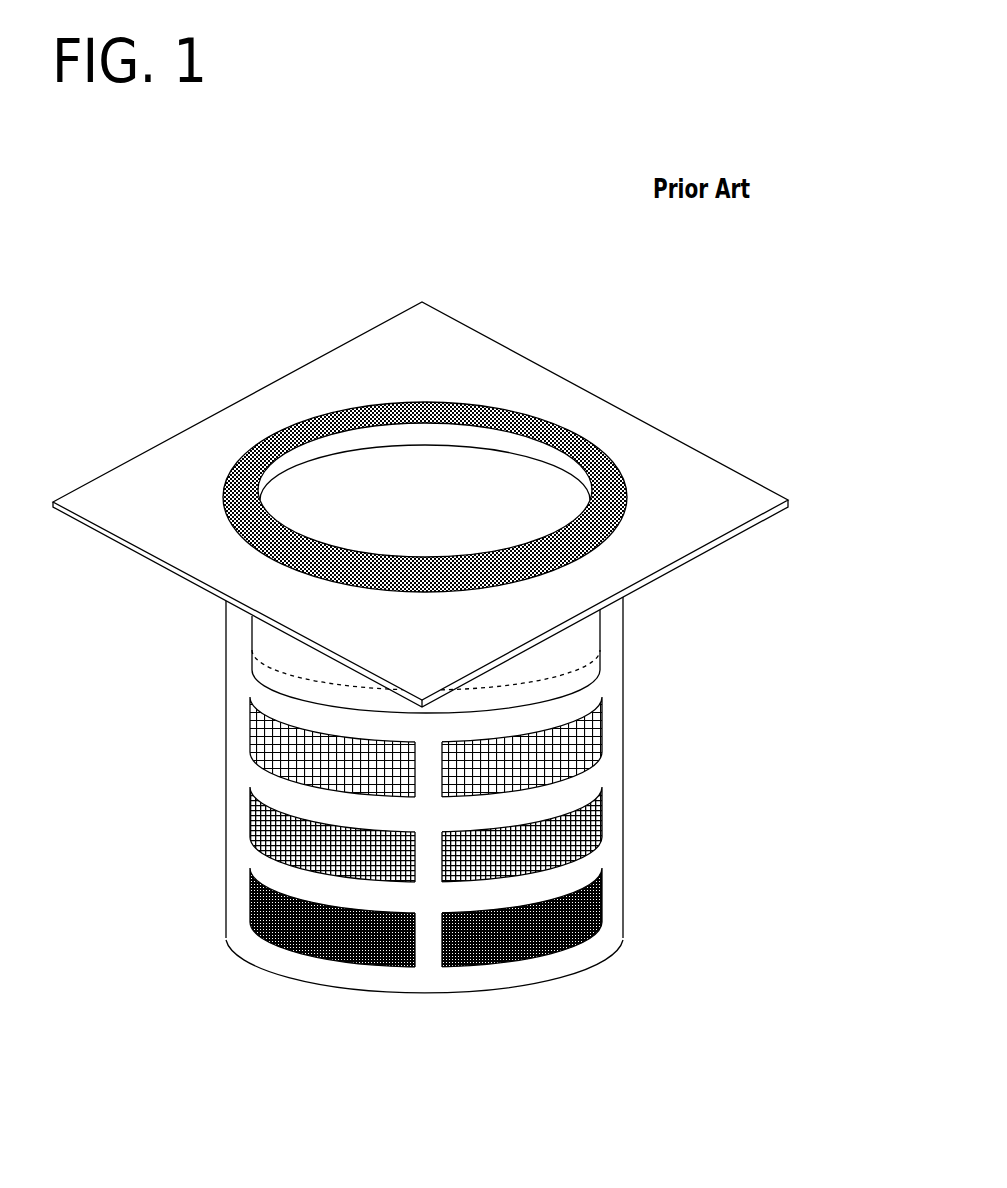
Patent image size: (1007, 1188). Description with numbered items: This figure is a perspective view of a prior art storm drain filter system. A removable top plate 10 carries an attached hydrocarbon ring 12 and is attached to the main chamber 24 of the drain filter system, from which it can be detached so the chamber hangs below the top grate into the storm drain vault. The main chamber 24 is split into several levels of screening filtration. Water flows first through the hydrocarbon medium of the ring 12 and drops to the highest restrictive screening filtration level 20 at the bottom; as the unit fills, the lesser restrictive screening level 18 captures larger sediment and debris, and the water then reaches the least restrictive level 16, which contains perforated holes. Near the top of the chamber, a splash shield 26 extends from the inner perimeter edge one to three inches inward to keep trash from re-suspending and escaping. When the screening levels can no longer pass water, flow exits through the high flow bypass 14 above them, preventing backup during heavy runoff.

The top plate 10 is at (183, 478).
The hydrocarbon ring 12 is at (415, 412).
The high flow bypass 14 is at (575, 645).
The least restrictive level of screening filtration 16 is at (575, 750).
The lesser restrictive screening level of filtration 18 is at (575, 833).
The highest restrictive screening filtration level 20 is at (575, 918).
The main chamber 24 is at (200, 609).
The splash shield 26 is at (575, 678).